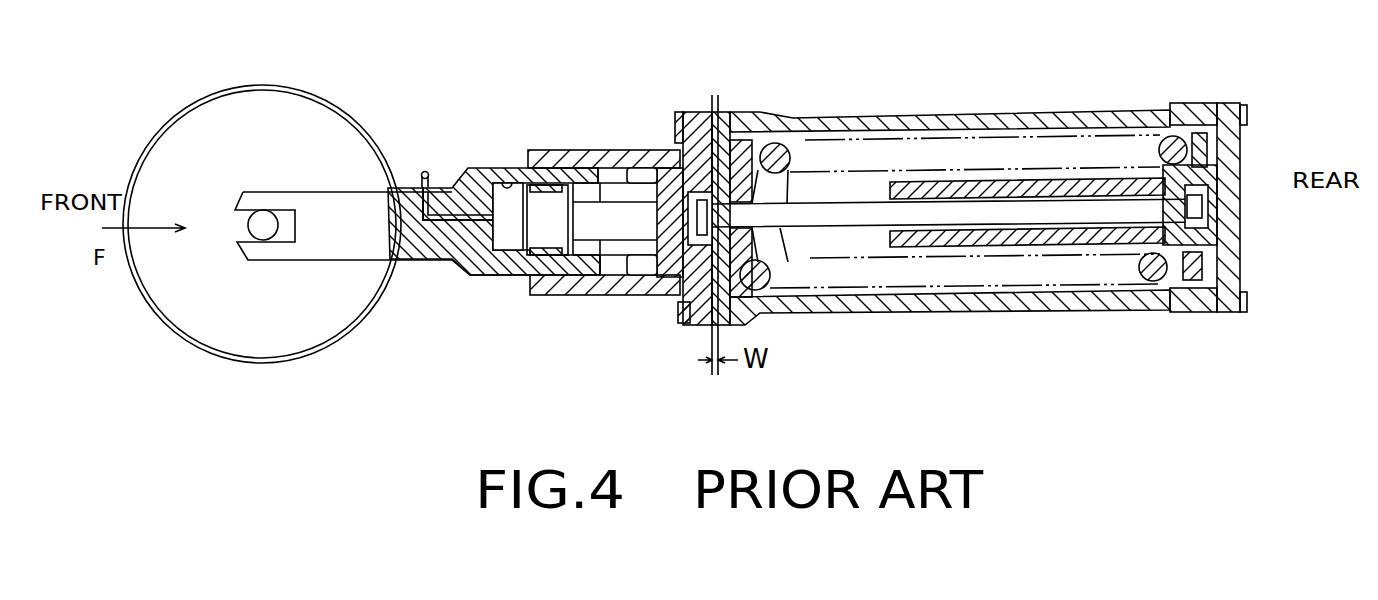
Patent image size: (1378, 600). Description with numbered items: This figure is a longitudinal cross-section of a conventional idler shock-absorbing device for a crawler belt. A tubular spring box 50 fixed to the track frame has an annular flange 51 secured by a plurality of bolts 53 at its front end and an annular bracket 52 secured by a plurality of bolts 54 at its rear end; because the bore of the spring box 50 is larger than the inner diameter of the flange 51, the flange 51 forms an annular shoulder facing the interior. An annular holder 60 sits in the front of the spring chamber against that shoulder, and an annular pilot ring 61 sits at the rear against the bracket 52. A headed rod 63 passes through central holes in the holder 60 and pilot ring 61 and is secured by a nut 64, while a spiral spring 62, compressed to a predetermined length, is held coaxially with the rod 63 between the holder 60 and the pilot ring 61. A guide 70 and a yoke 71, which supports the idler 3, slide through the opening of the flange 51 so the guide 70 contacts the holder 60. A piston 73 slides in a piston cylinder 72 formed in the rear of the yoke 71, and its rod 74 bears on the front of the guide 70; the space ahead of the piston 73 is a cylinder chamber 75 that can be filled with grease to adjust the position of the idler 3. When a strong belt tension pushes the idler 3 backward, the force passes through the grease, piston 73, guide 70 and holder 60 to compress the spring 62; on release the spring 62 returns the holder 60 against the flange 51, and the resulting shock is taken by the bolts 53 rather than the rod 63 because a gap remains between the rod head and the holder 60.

The idler 3 is at (258, 118).
The spring box 50 is at (933, 125).
The annular flange 51 is at (614, 157).
The annular bracket 52 is at (1225, 110).
The bolts 53 is at (672, 118).
The bolts 54 is at (1248, 108).
The annular holder 60 is at (733, 115).
The annular pilot ring 61 is at (1172, 103).
The spiral spring 62 is at (1042, 272).
The headed rod 63 is at (943, 215).
The nut 64 is at (1175, 250).
The guide 70 is at (660, 260).
The yoke 71 is at (337, 250).
The piston cylinder 72 is at (512, 183).
The piston 73 is at (547, 235).
The rod 74 is at (613, 223).
The cylinder chamber 75 is at (467, 173).